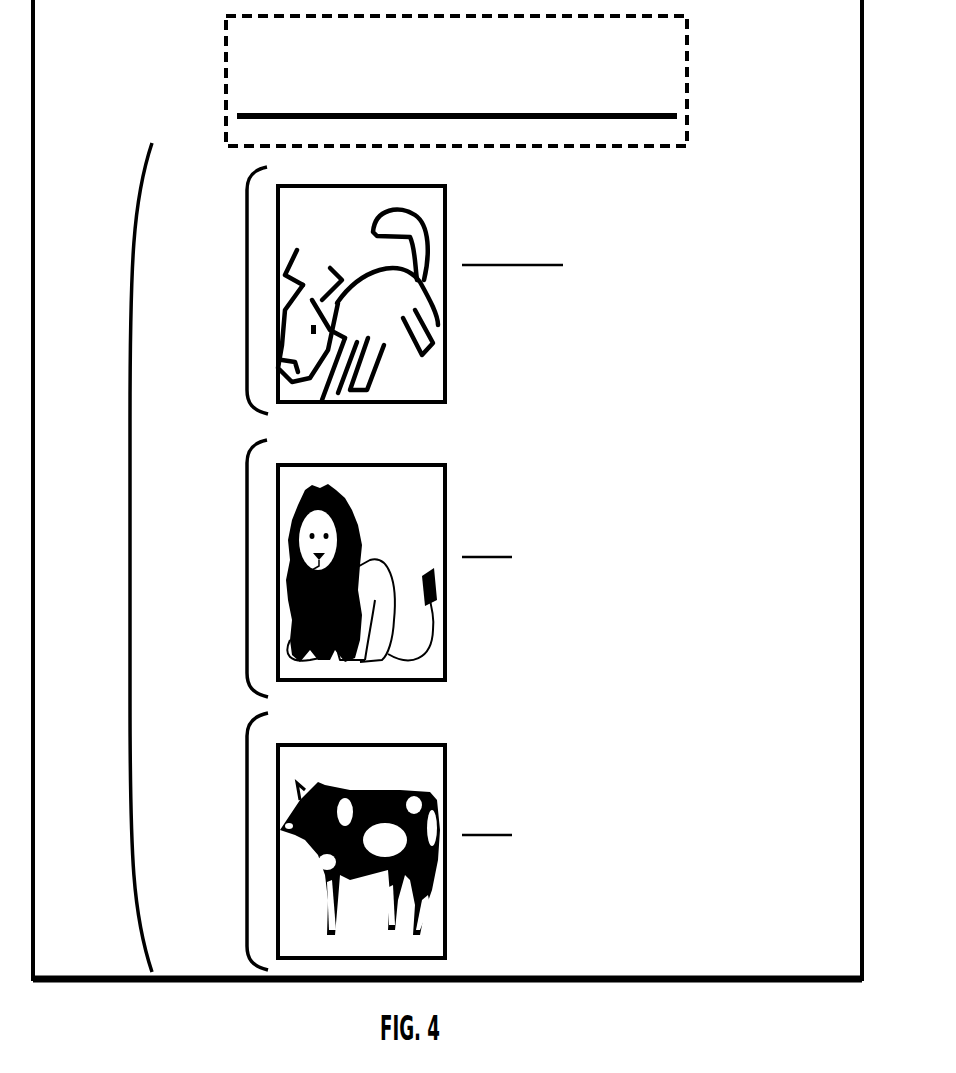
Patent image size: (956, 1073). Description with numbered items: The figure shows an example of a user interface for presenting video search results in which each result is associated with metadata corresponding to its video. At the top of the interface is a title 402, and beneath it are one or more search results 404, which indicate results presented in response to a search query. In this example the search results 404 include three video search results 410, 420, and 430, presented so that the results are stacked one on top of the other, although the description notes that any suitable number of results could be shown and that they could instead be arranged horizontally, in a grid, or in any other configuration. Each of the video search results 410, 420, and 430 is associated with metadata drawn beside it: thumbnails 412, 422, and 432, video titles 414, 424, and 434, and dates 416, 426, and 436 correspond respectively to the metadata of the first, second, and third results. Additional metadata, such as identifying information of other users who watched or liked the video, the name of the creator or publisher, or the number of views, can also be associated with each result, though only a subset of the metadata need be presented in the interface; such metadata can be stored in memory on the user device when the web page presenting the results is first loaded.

The title 402 is at (480, 81).
The search results 404 is at (129, 489).
The video search result 410 is at (247, 295).
The thumbnail 412 is at (437, 207).
The video title 414 is at (566, 257).
The date 416 is at (550, 300).
The video search result 420 is at (247, 570).
The thumbnail 422 is at (427, 503).
The video title 424 is at (520, 544).
The date 426 is at (548, 588).
The video search result 430 is at (247, 843).
The thumbnail 432 is at (437, 775).
The video title 434 is at (520, 821).
The date 436 is at (565, 882).